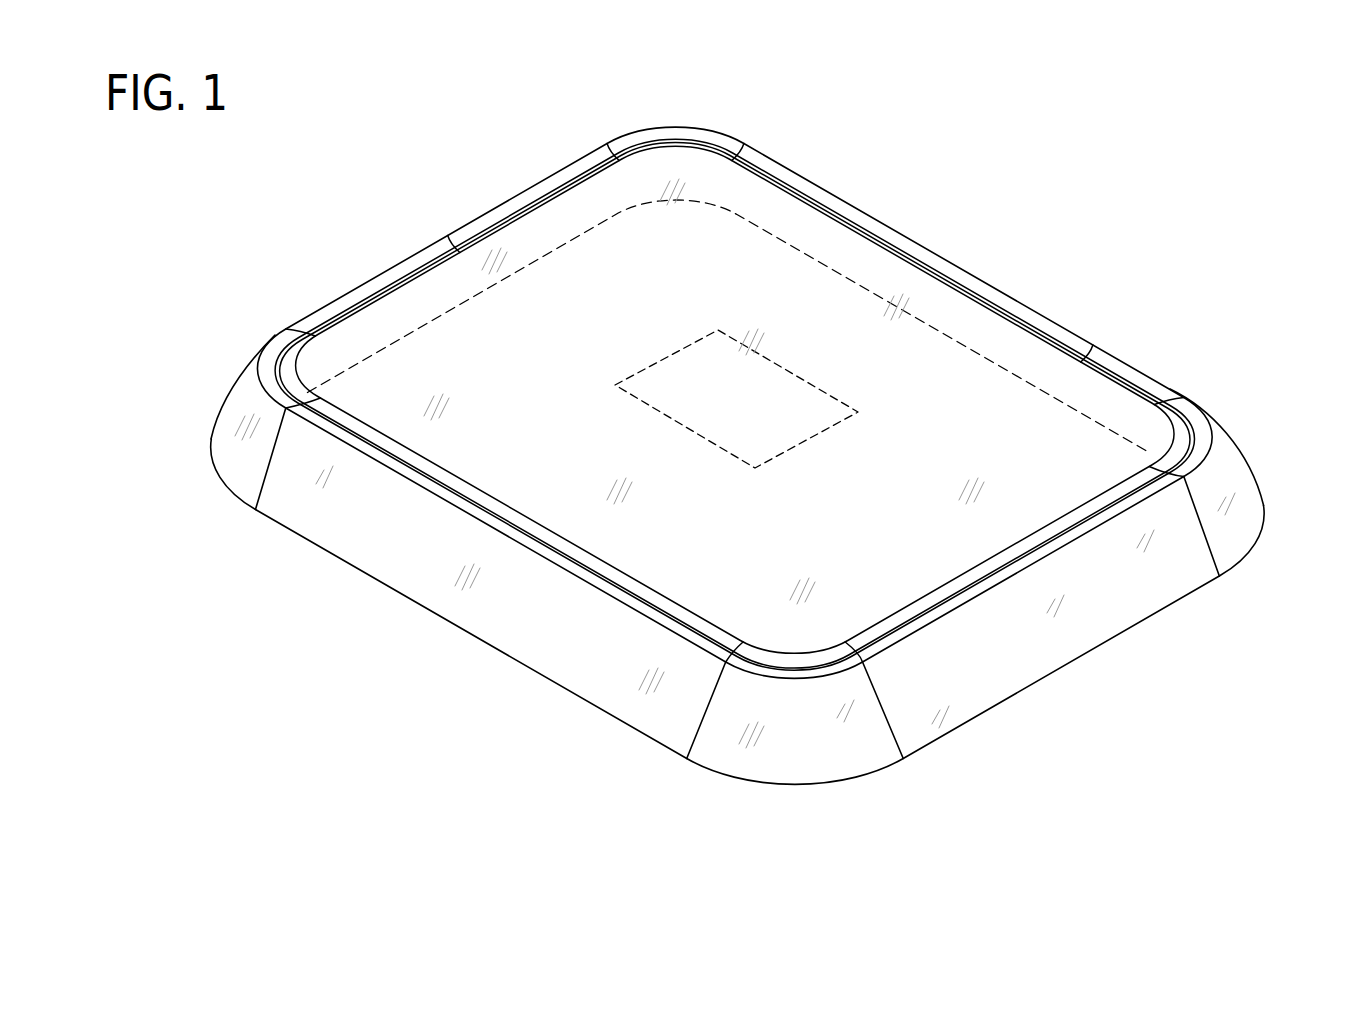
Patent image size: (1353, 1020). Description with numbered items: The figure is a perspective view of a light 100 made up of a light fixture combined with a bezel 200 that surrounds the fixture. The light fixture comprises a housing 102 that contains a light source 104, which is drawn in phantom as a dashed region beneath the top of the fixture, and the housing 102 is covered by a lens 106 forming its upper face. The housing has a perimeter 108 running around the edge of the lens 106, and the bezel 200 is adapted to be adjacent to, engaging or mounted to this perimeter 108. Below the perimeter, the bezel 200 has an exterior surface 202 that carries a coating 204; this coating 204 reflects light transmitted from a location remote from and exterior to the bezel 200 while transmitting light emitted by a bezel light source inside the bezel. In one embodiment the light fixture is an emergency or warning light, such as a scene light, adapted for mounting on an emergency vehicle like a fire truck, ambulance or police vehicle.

The light 100 is at (1146, 150).
The housing 102 is at (752, 200).
The light source 104 is at (834, 398).
The lens 106 is at (910, 526).
The perimeter 108 is at (456, 245).
The bezel 200 is at (1087, 604).
The exterior surface 202 is at (1183, 601).
The coating 204 is at (1006, 661).